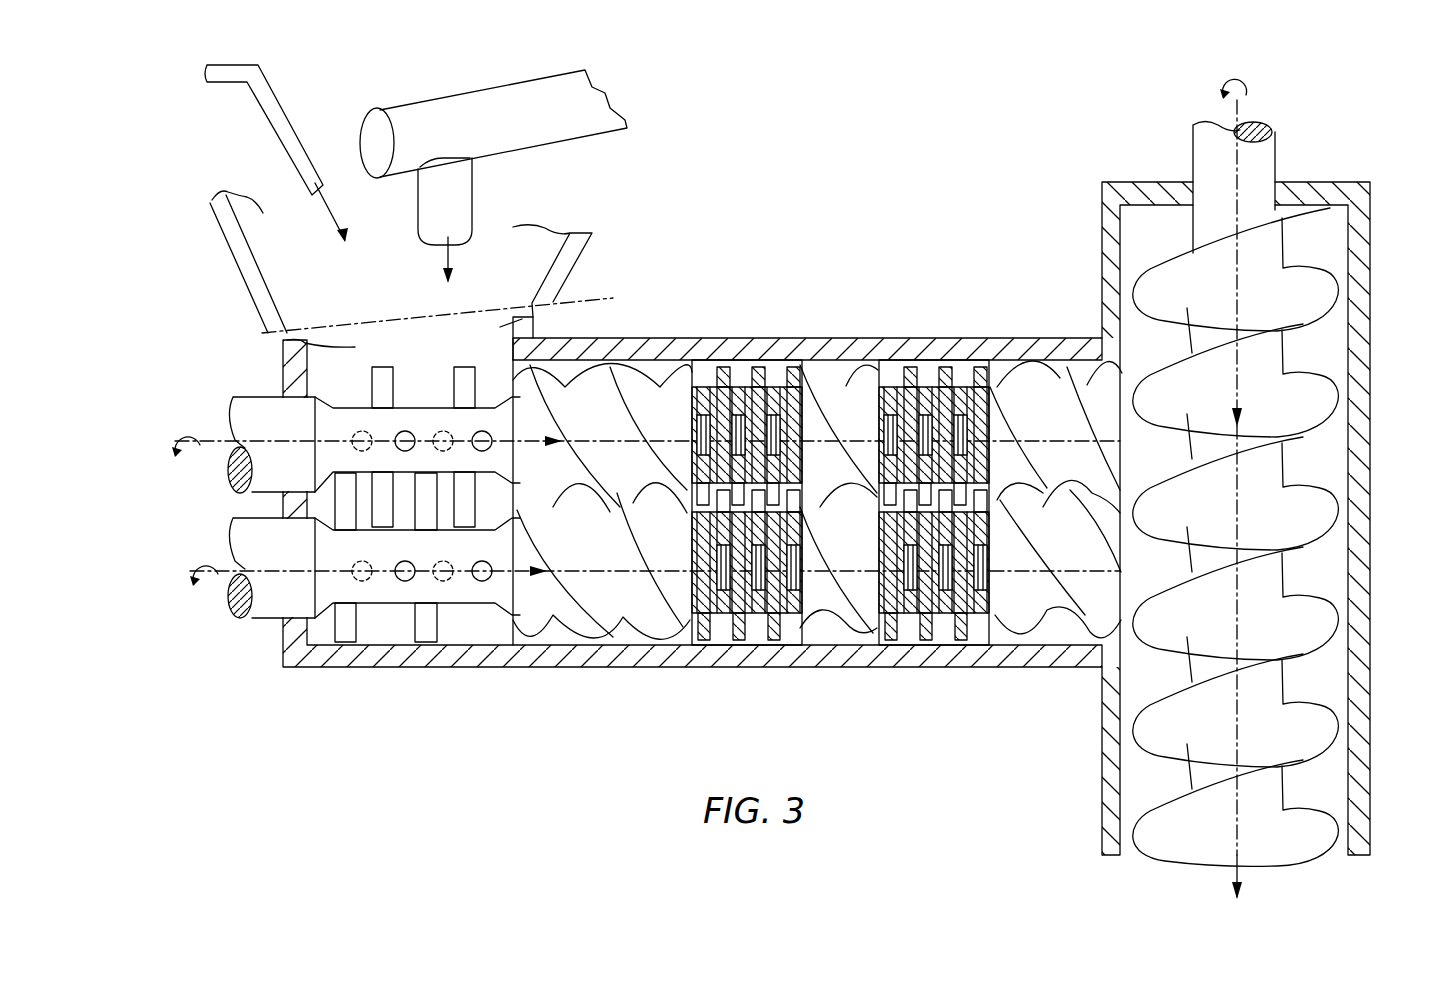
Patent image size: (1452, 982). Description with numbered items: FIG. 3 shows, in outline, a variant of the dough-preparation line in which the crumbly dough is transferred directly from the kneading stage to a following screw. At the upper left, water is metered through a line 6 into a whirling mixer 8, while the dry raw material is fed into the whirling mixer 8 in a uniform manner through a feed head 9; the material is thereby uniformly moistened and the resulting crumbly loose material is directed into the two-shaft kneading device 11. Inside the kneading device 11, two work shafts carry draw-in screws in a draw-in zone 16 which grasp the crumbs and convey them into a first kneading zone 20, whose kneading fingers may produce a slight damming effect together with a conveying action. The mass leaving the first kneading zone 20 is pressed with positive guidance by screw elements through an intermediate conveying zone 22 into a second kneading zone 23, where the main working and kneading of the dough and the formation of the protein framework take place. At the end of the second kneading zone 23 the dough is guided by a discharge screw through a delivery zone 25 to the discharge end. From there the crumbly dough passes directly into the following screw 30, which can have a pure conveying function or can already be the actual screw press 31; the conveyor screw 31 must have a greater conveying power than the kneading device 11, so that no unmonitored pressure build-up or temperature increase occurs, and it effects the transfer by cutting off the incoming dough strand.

The line 6 is at (273, 97).
The whirling mixer 8 is at (308, 692).
The feed head 9 is at (533, 133).
The kneading device 11 is at (657, 340).
The draw-in zone 16 is at (693, 692).
The first kneading zone 20 is at (697, 692).
The intermediate conveying zone 22 is at (797, 692).
The second kneading zone 23 is at (992, 692).
The delivery zone 25 is at (996, 692).
The following screw 30 is at (1365, 287).
The conveyor screw 31 is at (1317, 418).